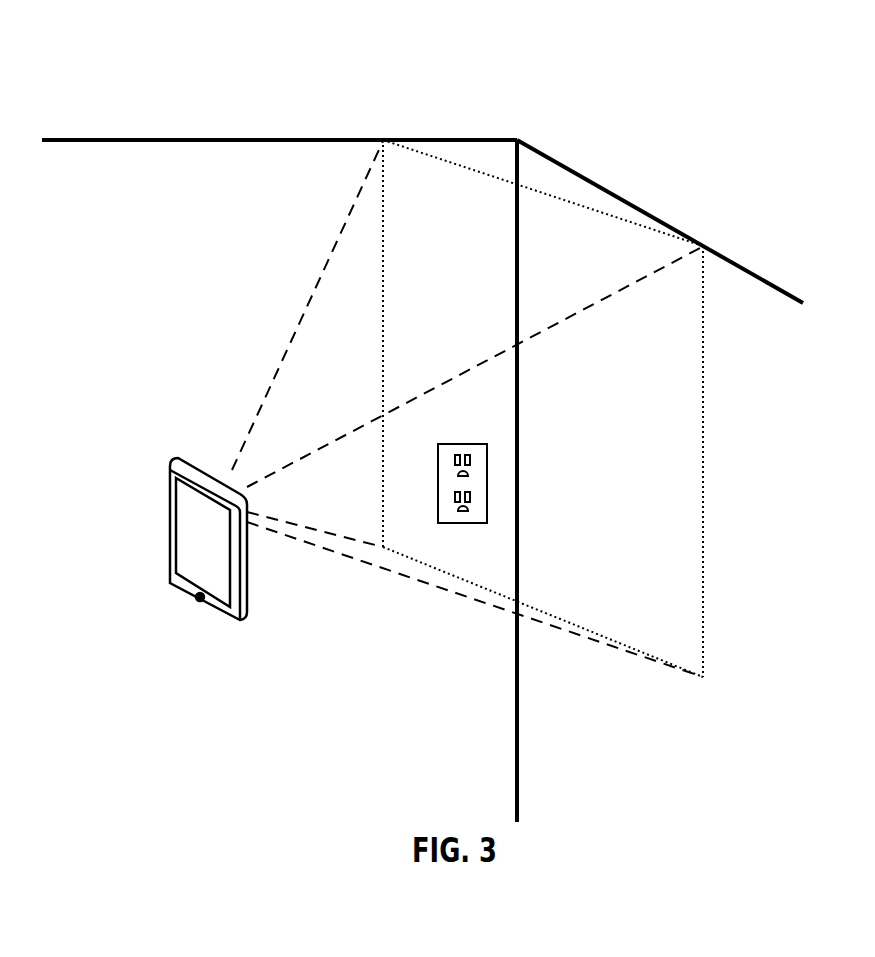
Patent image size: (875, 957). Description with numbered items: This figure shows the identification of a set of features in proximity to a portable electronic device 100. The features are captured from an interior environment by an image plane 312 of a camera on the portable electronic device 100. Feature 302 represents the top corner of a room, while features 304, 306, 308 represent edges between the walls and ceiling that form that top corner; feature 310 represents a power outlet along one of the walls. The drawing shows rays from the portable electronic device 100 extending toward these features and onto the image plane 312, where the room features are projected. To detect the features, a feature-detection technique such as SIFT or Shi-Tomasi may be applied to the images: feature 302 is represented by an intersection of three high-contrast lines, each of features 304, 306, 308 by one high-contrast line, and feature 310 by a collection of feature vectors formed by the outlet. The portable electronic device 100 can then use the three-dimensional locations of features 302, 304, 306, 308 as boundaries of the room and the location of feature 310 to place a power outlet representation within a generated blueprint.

The portable electronic device 100 is at (179, 570).
The feature 302 is at (517, 138).
The feature 304 is at (636, 208).
The feature 306 is at (440, 138).
The feature 308 is at (518, 385).
The feature 310 is at (470, 524).
The image plane 312 is at (703, 510).